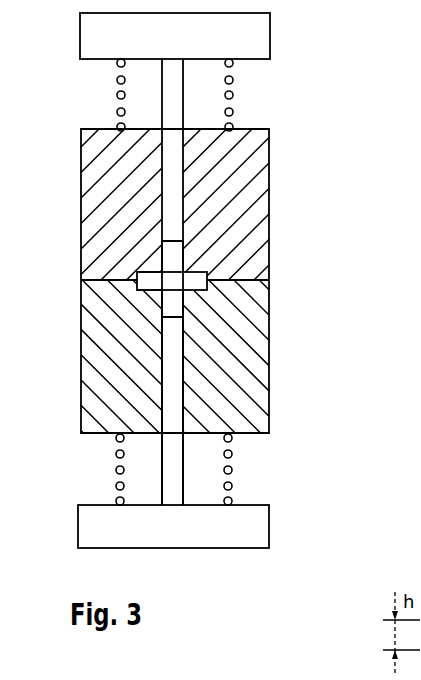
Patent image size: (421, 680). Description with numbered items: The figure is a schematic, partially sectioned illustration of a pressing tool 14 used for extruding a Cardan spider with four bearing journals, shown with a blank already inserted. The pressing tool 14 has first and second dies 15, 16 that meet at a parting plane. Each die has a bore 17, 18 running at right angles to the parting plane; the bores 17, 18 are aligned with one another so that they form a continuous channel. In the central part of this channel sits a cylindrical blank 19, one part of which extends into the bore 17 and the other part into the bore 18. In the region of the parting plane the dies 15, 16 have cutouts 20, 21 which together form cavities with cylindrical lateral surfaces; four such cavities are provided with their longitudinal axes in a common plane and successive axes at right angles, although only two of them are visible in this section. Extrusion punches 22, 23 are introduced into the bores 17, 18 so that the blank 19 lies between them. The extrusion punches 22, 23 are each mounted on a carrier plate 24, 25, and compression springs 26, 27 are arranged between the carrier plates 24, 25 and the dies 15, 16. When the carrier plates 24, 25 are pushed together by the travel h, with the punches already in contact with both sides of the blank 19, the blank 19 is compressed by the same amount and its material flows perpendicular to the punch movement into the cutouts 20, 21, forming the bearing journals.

The pressing tool 14 is at (305, 72).
The first die 15 is at (250, 205).
The second die 16 is at (232, 371).
The bore 17 is at (168, 215).
The bore 18 is at (162, 345).
The cylindrical blank 19 is at (184, 304).
The cutout 20 is at (137, 276).
The cutout 21 is at (137, 281).
The extrusion punch 22 is at (176, 160).
The extrusion punch 23 is at (173, 401).
The carrier plate 24 is at (258, 30).
The carrier plate 25 is at (250, 525).
The compression spring 26 is at (233, 97).
The compression spring 27 is at (232, 470).